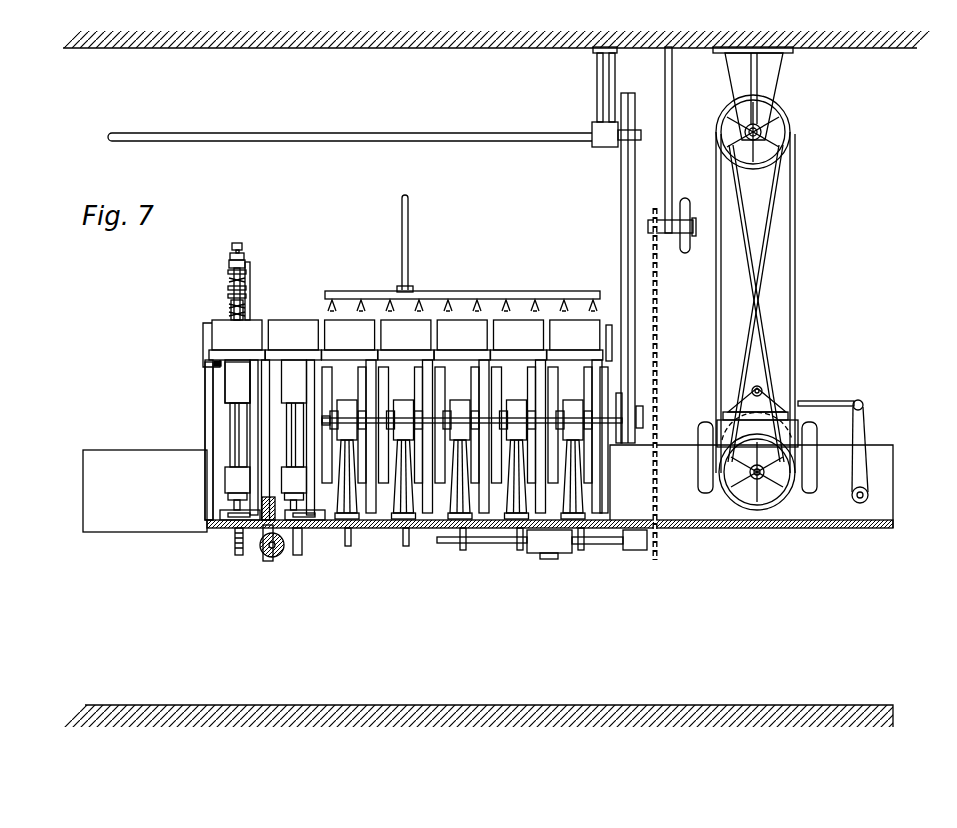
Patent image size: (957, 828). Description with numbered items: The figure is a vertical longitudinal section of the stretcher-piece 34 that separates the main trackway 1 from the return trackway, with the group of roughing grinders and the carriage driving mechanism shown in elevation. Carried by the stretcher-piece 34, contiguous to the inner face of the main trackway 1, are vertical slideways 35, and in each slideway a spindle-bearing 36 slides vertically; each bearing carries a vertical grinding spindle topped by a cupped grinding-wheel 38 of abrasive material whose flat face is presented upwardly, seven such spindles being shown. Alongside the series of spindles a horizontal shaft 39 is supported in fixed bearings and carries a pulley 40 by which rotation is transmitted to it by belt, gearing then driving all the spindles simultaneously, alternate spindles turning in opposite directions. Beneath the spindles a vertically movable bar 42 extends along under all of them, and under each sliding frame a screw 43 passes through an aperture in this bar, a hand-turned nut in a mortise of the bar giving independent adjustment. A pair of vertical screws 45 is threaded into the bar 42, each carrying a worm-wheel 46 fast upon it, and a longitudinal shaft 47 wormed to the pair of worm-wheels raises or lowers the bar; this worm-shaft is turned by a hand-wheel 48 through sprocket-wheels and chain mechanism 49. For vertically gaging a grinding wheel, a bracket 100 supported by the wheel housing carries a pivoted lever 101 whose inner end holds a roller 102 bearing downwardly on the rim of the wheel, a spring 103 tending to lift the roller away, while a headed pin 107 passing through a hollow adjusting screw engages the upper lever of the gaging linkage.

The main trackway 1 is at (123, 468).
The stretcher-piece 34 is at (220, 500).
The vertical slideways 35 is at (222, 420).
The spindle-bearing 36 is at (237, 383).
The grinding-wheel 38 is at (222, 330).
The horizontal shaft 39 is at (648, 420).
The pulley 40 is at (627, 447).
The vertically movable bar 42 is at (324, 534).
The screw 43 is at (233, 532).
The vertical screws 45 is at (270, 497).
The worm-wheel 46 is at (255, 552).
The longitudinal shaft 47 is at (505, 545).
The hand-wheel 48 is at (688, 253).
The sprocket-wheels and chain mechanism 49 is at (658, 389).
The bracket 100 is at (244, 250).
The lever 101 is at (230, 256).
The roller 102 is at (246, 262).
The spring 103 is at (250, 288).
The headed pin 107 is at (234, 315).